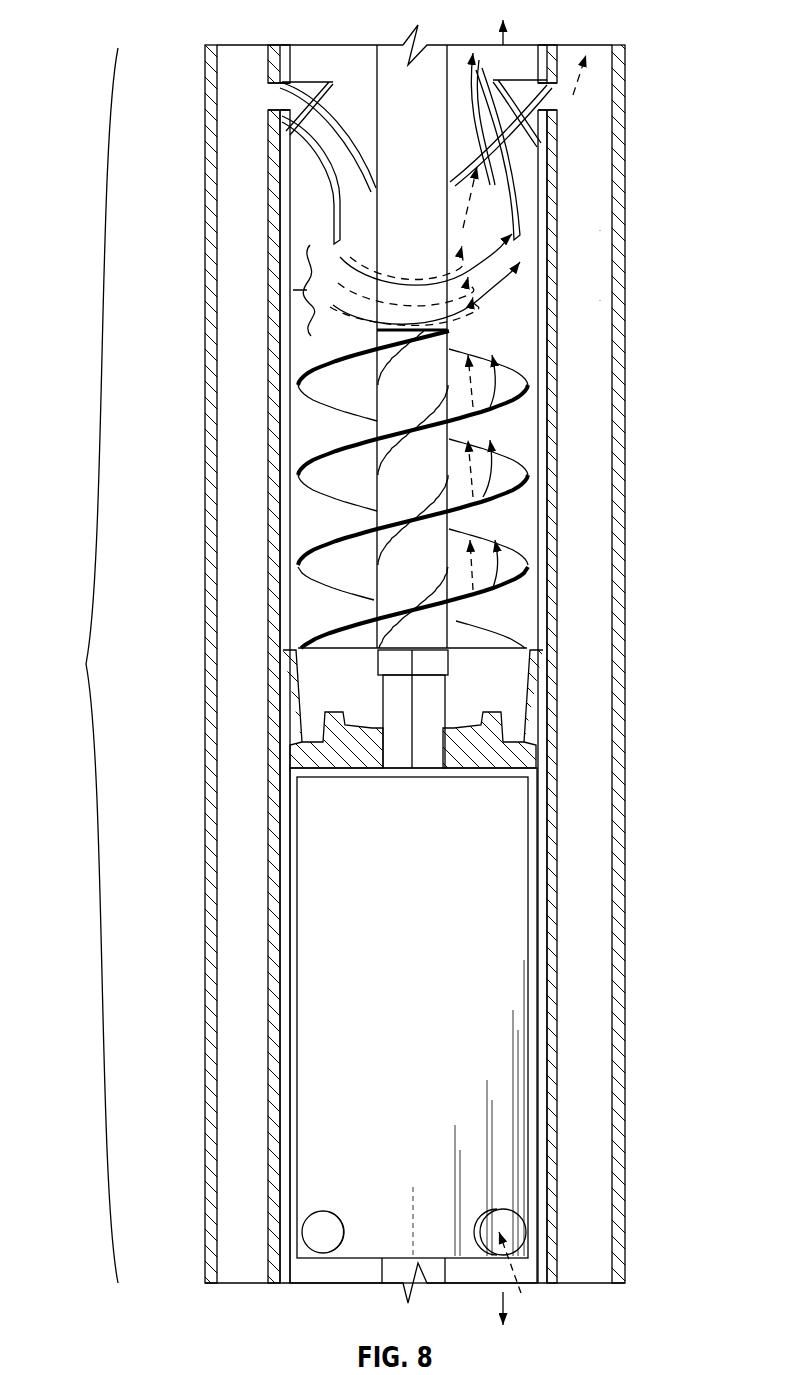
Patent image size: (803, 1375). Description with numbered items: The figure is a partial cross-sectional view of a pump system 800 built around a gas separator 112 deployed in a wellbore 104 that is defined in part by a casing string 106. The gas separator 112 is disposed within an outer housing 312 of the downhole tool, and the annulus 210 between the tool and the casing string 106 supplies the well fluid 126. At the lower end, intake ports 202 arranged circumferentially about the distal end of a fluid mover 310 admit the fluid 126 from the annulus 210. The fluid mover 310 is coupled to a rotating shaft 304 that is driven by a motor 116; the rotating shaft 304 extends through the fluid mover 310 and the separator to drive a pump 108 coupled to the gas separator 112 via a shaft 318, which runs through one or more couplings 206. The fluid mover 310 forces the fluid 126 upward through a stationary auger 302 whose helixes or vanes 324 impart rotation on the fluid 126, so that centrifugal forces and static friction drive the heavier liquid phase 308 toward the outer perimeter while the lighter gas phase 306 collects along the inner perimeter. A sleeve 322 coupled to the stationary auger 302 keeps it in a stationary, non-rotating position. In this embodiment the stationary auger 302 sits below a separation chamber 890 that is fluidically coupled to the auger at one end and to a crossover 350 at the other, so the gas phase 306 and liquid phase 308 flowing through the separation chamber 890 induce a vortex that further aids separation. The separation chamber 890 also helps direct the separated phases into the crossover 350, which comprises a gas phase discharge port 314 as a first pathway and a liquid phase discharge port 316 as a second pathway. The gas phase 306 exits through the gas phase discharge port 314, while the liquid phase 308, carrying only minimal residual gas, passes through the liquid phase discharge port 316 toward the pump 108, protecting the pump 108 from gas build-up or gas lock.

The pump system 800 is at (182, 26).
The gas separator 112 is at (78, 665).
The wellbore 104 is at (624, 293).
The casing string 106 is at (608, 266).
The pump 108 is at (505, 32).
The motor 116 is at (508, 1303).
The fluid 126 is at (558, 1283).
The intake ports 202 is at (323, 1231).
The couplings 206 is at (452, 1276).
The annulus 210 is at (597, 583).
The stationary auger 302 is at (508, 463).
The rotating shaft 304 is at (455, 758).
The gas phase 306 is at (547, 103).
The liquid phase 308 is at (552, 94).
The fluid mover 310 is at (534, 862).
The outer housing 312 is at (556, 997).
The gas phase discharge port 314 is at (288, 106).
The liquid phase discharge port 316 is at (316, 184).
The shaft 318 is at (376, 68).
The sleeve 322 is at (538, 467).
The helixes or vanes 324 is at (510, 420).
The crossover 350 is at (346, 244).
The separation chamber 890 is at (300, 290).